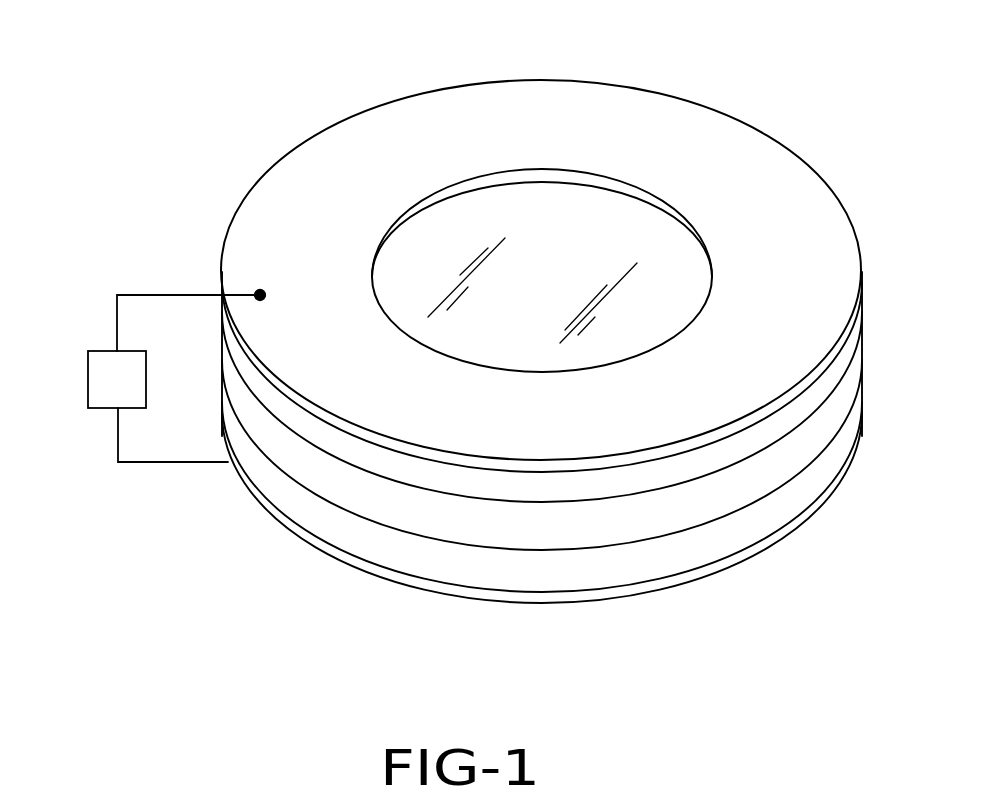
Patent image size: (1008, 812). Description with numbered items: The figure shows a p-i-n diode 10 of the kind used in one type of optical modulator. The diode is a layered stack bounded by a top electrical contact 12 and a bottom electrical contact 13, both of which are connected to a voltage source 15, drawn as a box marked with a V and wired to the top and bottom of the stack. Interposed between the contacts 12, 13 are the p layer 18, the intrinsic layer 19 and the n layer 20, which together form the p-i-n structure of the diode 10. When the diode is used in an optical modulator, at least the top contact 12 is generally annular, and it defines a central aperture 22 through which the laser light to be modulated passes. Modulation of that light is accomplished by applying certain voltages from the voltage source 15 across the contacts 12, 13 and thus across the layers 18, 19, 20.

The p-i-n diode 10 is at (291, 121).
The top electrical contact 12 is at (663, 120).
The bottom electrical contact 13 is at (672, 582).
The voltage source 15 is at (88, 372).
The p layer 18 is at (380, 462).
The intrinsic layer 19 is at (470, 526).
The n layer 20 is at (580, 571).
The central aperture 22 is at (502, 222).